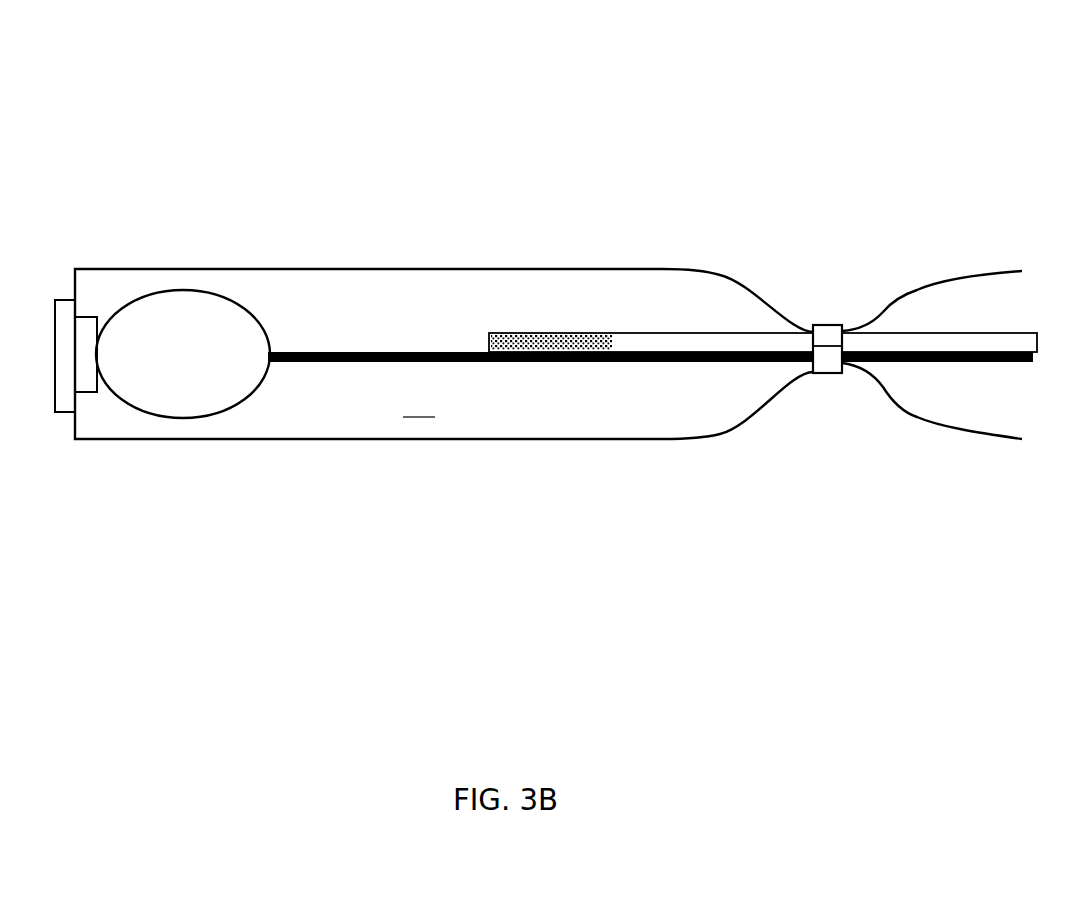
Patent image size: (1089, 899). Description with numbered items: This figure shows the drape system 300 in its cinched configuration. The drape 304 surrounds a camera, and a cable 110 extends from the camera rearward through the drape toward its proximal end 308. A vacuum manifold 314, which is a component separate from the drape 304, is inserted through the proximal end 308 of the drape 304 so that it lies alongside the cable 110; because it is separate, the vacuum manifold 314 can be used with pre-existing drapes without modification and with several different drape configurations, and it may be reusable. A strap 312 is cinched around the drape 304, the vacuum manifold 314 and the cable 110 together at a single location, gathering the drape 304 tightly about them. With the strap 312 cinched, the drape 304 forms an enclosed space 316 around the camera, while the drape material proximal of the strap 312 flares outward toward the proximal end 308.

The drape system 300 is at (180, 128).
The drape 304 is at (256, 243).
The cable 110 is at (395, 352).
The vacuum manifold 314 is at (750, 332).
The strap 312 is at (825, 373).
The enclosed space 316 is at (420, 406).
The proximal end 308 is at (975, 472).